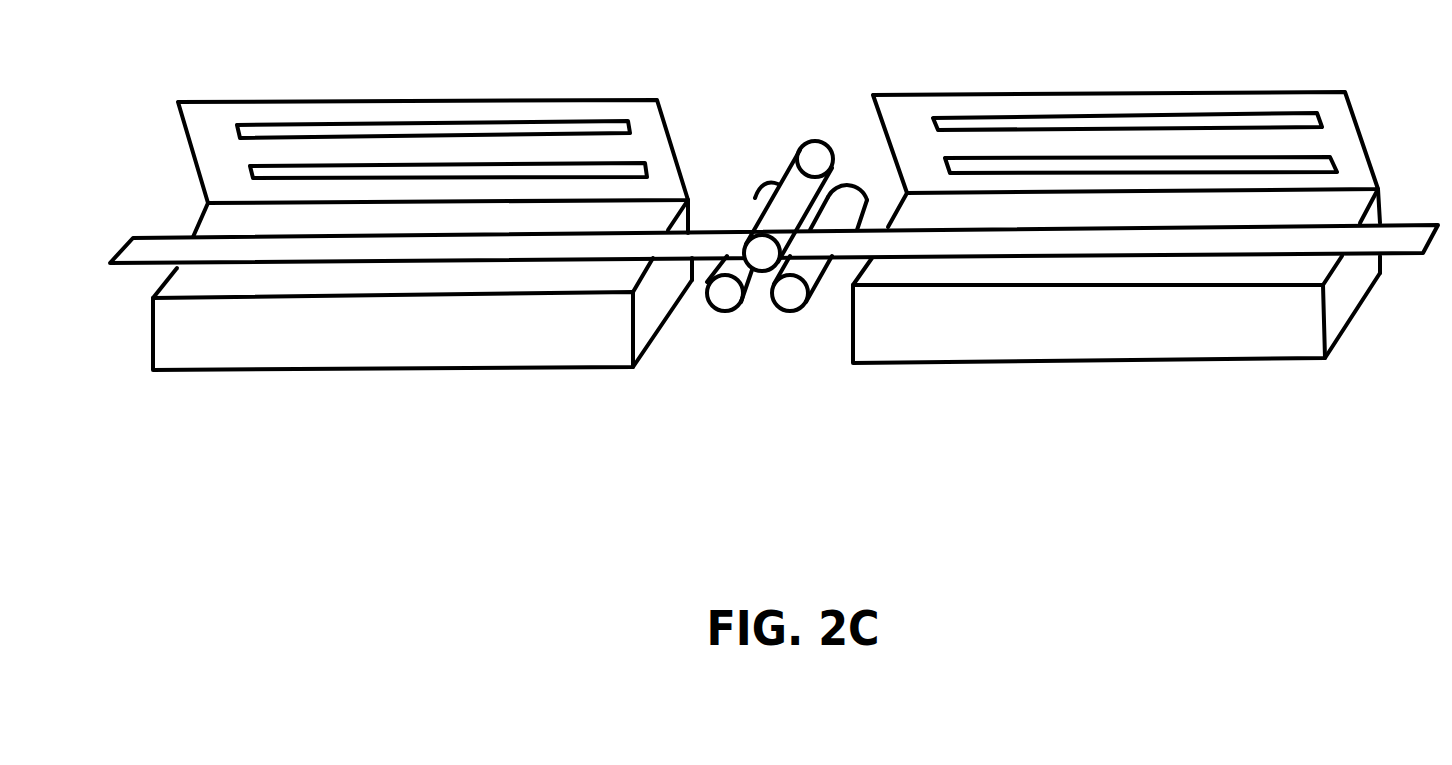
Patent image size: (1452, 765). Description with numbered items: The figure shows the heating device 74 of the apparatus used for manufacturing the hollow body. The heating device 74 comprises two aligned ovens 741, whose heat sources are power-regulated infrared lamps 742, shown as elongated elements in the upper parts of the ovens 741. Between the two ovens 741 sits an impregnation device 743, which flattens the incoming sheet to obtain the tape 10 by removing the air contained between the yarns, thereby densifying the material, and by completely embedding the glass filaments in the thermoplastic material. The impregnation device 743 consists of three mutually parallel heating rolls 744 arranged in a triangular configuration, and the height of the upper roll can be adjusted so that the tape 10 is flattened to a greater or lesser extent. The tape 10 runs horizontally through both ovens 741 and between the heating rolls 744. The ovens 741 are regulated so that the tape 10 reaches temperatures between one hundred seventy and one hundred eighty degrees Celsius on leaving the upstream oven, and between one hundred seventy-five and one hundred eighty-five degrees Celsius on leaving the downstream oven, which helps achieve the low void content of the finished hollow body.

The tape 10 is at (158, 252).
The heating device 74 is at (778, 265).
The oven 741 is at (377, 353).
The infrared lamp 742 is at (455, 140).
The impregnation device 743 is at (723, 297).
The heating roll 744 is at (738, 232).